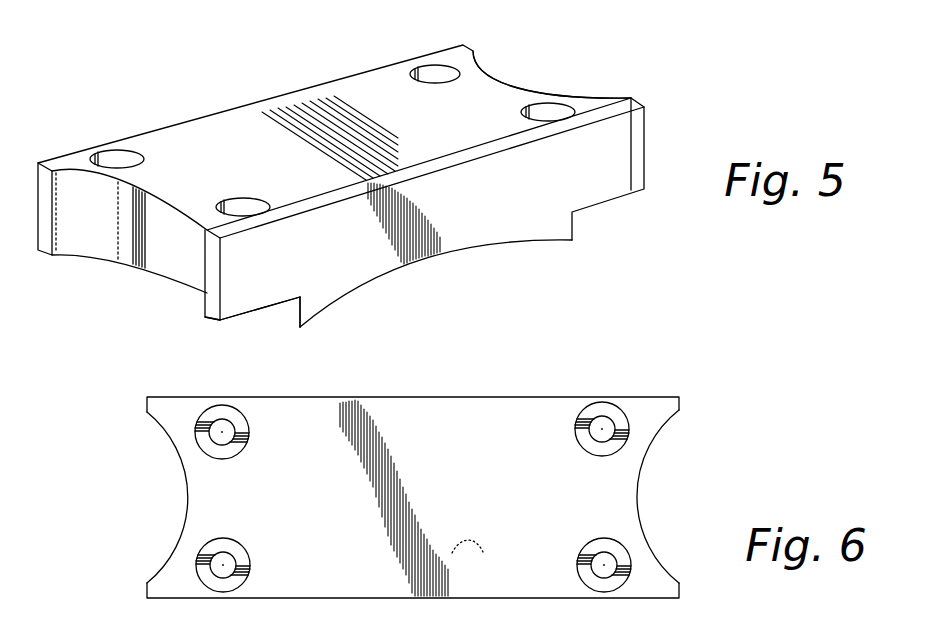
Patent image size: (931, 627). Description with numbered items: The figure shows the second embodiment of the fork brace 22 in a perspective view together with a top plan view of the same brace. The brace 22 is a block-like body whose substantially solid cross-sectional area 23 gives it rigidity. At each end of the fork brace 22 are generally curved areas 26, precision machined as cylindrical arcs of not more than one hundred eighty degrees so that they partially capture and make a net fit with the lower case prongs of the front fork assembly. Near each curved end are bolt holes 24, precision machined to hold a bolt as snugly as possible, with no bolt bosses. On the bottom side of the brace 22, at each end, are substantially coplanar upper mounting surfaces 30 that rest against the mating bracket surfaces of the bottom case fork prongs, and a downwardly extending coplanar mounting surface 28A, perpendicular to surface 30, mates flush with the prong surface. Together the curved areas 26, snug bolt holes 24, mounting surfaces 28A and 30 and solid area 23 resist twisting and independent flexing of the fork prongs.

In FIG. 5, the fork brace 22 is at (300, 93).
In FIG. 5, the solid cross-sectional area 23 is at (443, 218).
In FIG. 5, the bolt holes 24 is at (430, 72).
In FIG. 6, the bolt holes 24 is at (604, 408).
In FIG. 5, the curved areas 26 is at (152, 247).
In FIG. 6, the curved areas 26 is at (187, 496).
In FIG. 5, the downwardly extending mounting surface 28A is at (296, 322).
In FIG. 5, the upper mounting surfaces 30 is at (233, 322).